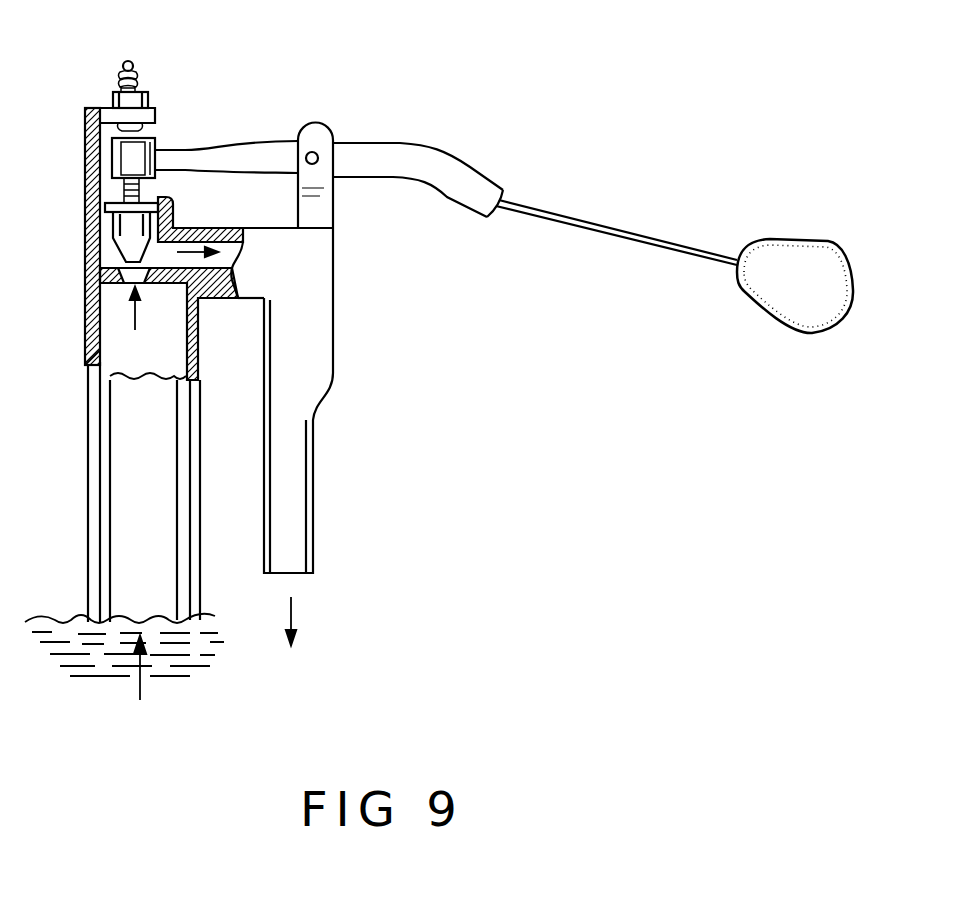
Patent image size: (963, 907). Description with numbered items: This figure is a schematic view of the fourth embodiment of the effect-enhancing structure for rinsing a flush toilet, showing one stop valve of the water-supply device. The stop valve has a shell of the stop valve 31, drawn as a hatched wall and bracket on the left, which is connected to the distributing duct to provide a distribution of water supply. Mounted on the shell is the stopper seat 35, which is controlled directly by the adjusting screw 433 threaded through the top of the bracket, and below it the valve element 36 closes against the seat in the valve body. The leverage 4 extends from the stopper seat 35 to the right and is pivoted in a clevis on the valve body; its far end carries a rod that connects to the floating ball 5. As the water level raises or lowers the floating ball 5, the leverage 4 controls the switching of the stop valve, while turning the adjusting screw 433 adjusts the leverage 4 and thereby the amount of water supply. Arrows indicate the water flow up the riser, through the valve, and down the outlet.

The adjusting screw 433 is at (126, 62).
The stopper seat 35 is at (148, 138).
The leverage 4 is at (211, 148).
The shell of the stop valve 31 is at (82, 152).
The valve seat 36 is at (98, 260).
The floating ball 5 is at (782, 240).